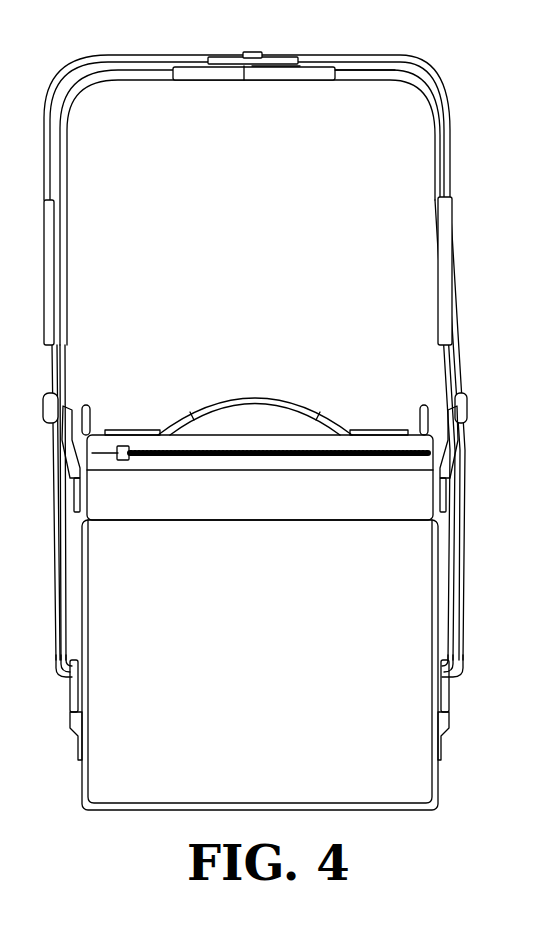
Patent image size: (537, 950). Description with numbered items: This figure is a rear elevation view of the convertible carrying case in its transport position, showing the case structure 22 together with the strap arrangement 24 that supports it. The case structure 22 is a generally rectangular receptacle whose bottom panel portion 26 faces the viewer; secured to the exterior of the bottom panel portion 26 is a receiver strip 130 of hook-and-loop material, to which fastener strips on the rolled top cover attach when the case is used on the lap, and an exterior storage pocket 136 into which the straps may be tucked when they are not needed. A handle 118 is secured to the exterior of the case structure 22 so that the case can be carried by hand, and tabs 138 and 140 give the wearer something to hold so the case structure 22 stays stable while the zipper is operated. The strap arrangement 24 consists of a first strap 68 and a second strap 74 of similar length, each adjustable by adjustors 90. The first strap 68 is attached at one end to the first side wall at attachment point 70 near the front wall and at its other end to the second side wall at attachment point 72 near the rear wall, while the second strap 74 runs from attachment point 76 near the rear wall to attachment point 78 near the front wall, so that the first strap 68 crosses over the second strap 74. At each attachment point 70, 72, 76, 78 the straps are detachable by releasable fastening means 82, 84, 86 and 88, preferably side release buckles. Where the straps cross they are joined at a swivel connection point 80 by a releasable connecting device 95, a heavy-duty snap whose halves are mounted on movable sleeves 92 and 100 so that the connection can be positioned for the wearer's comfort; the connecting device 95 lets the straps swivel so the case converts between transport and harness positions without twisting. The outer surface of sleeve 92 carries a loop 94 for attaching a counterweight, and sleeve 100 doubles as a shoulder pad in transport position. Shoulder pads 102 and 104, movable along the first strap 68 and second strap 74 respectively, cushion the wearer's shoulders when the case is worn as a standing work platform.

The case structure 22 is at (253, 614).
The strap arrangement 24 is at (72, 168).
The bottom panel portion 26 is at (258, 685).
The first strap 68 is at (394, 64).
The attachment point 70 is at (76, 725).
The attachment point 72 is at (445, 495).
The second strap 74 is at (388, 70).
The attachment point 76 is at (75, 495).
The attachment point 78 is at (447, 720).
The swivel connection point 80 is at (248, 73).
The releasable fastening means 82 is at (70, 688).
The releasable fastening means 84 is at (458, 452).
The releasable fastening means 86 is at (64, 455).
The releasable fastening means 88 is at (450, 680).
The adjustors 90 is at (43, 410).
The movable sleeve 92 is at (292, 60).
The loop 94 is at (250, 55).
The releasable connecting device 95 is at (256, 73).
The movable sleeve 100 is at (233, 80).
The shoulder pad 102 is at (44, 222).
The shoulder pad 104 is at (452, 228).
The handle 118 is at (270, 400).
The receiver strip 130 is at (260, 462).
The exterior storage pocket 136 is at (283, 440).
The tab 138 is at (89, 407).
The tab 140 is at (425, 405).